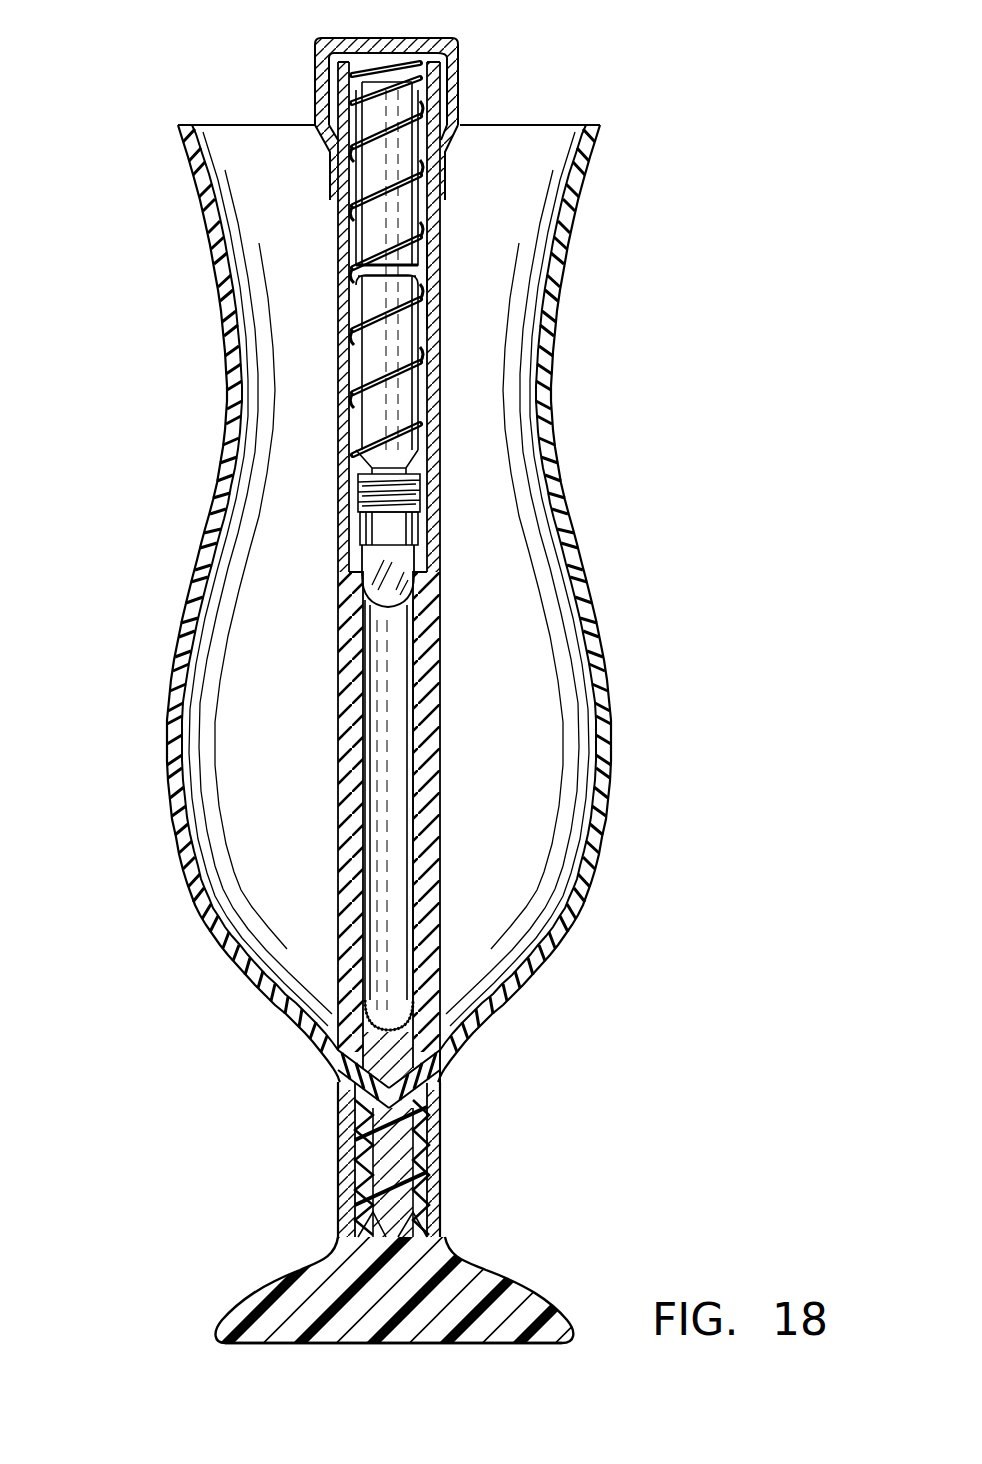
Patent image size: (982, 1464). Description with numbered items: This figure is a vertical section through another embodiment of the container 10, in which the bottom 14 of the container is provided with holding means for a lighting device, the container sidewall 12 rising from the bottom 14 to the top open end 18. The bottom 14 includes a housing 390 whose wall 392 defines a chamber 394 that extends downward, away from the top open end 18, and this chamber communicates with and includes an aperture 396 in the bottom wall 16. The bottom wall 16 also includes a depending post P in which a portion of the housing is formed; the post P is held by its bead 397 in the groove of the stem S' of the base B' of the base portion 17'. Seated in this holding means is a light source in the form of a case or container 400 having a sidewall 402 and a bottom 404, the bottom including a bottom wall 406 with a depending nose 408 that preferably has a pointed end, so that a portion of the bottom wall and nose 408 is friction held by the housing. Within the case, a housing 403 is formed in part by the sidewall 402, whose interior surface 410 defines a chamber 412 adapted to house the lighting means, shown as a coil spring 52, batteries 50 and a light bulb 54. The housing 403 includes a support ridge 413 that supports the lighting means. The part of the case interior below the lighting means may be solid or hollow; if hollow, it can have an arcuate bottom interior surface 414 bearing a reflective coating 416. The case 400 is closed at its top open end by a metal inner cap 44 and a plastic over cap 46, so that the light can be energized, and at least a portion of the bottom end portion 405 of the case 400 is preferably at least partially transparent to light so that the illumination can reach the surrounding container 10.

The container 10 is at (176, 405).
The side wall of bowl 12 is at (588, 551).
The bottom 14 is at (537, 978).
The bottom wall 16 is at (272, 1017).
The top open end 18 is at (496, 141).
The metal inner cap 44 is at (447, 78).
The plastic over cap 46 is at (424, 40).
The batteries 50 is at (367, 290).
The coil spring 52 is at (368, 322).
The light bulb 54 is at (416, 586).
The case or container 400 is at (446, 213).
The sidewall 402 is at (441, 276).
The housing 403 is at (446, 315).
The bottom 404 is at (330, 911).
The bottom end portion 405 is at (335, 742).
The bottom wall 406 is at (345, 1016).
The interior surface 410 is at (441, 373).
The chamber 412 is at (420, 464).
The support ridge 413 is at (346, 542).
The arcuate bottom interior surface 414 is at (445, 1068).
The reflective coating 416 is at (397, 975).
The housing 390 is at (338, 1058).
The wall 392 is at (422, 1147).
The chamber 394 is at (418, 1181).
The aperture 396 is at (447, 1009).
The bead 397 is at (357, 1150).
The stem insert 408 is at (387, 1110).
The depending post P is at (367, 1217).
The stem S' is at (448, 1222).
The base portion 17' is at (395, 1284).
The base B' is at (400, 1300).